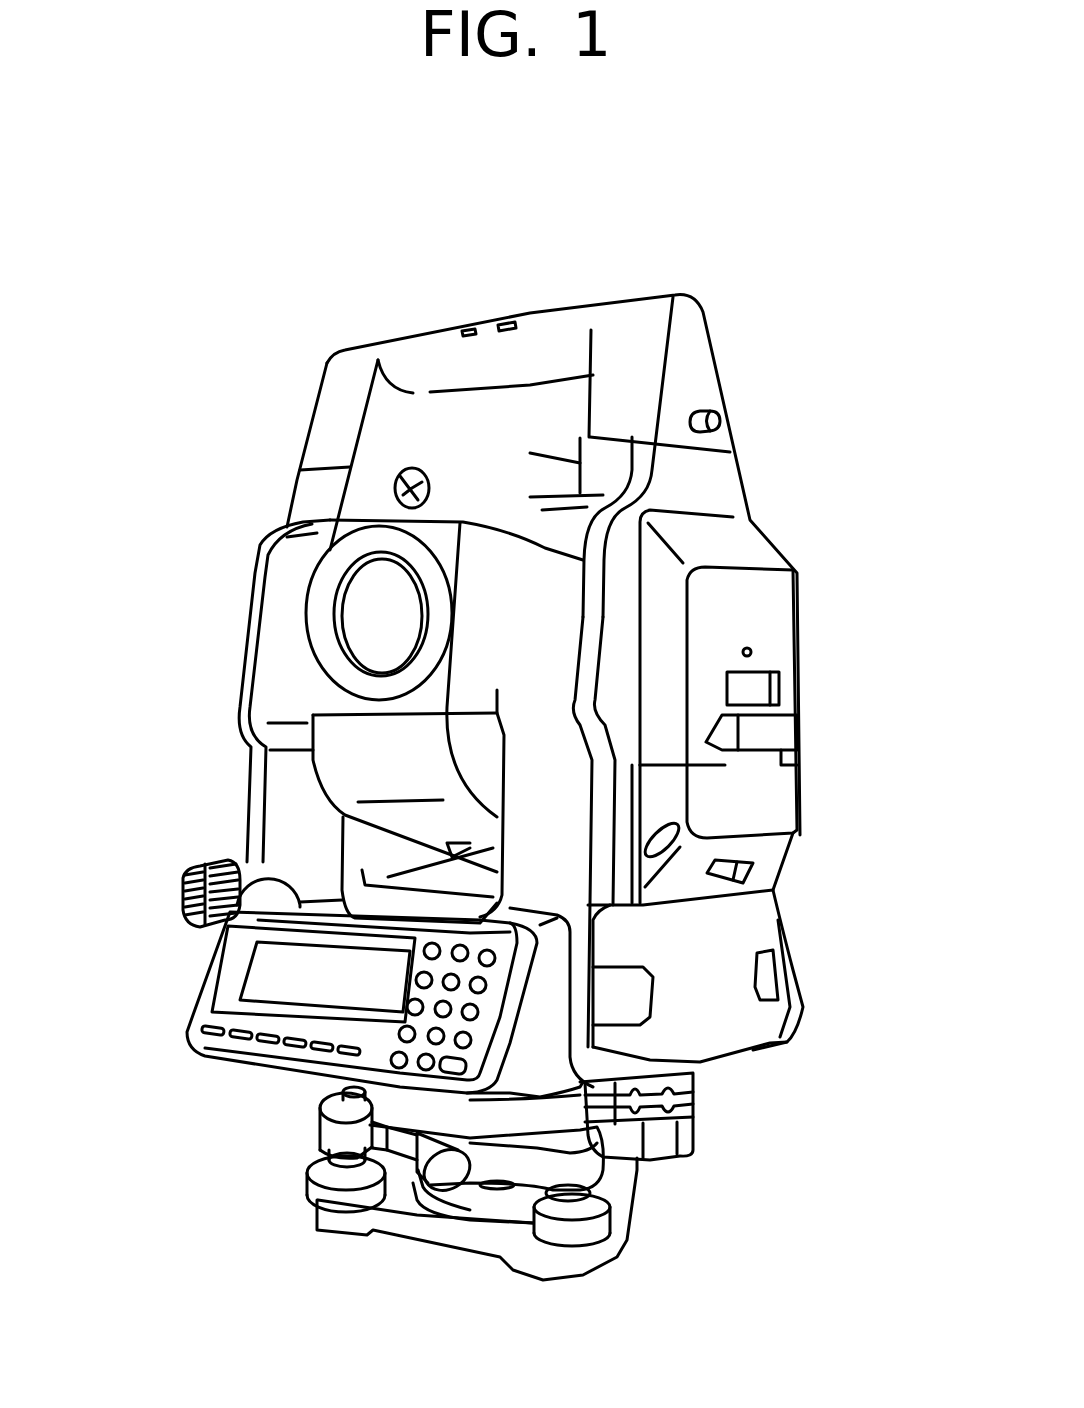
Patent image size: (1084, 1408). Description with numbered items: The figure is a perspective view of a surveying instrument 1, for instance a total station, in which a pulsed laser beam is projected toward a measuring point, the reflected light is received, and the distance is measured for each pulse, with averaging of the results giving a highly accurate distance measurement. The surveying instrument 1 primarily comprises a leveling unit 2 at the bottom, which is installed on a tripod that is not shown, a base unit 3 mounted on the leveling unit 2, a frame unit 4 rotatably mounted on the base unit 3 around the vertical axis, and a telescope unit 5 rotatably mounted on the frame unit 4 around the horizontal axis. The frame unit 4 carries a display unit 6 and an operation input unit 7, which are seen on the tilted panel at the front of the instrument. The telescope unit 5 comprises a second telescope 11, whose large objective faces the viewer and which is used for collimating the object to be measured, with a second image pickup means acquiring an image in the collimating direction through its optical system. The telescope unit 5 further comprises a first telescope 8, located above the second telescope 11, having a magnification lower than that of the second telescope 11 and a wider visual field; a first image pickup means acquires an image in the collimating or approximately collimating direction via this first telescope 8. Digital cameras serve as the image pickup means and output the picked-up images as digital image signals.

The surveying instrument 1 is at (113, 323).
The leveling unit 2 is at (317, 1230).
The base unit 3 is at (693, 1152).
The frame unit 4 is at (775, 545).
The telescope unit 5 is at (350, 762).
The display unit 6 is at (290, 972).
The operation input unit 7 is at (268, 1052).
The first telescope 8 is at (400, 474).
The second telescope 11 is at (372, 605).